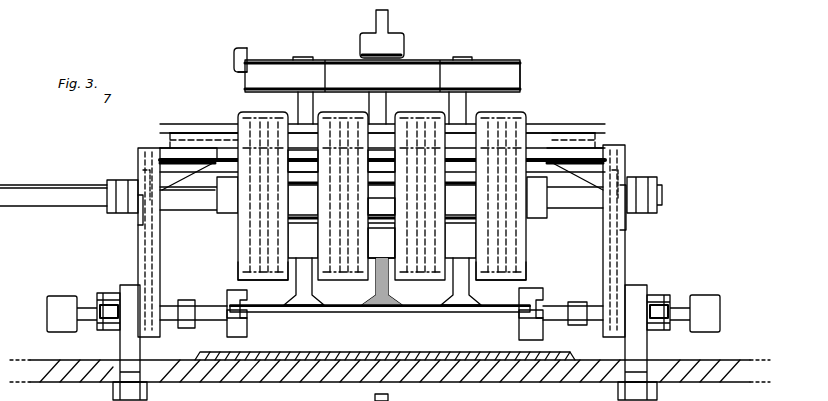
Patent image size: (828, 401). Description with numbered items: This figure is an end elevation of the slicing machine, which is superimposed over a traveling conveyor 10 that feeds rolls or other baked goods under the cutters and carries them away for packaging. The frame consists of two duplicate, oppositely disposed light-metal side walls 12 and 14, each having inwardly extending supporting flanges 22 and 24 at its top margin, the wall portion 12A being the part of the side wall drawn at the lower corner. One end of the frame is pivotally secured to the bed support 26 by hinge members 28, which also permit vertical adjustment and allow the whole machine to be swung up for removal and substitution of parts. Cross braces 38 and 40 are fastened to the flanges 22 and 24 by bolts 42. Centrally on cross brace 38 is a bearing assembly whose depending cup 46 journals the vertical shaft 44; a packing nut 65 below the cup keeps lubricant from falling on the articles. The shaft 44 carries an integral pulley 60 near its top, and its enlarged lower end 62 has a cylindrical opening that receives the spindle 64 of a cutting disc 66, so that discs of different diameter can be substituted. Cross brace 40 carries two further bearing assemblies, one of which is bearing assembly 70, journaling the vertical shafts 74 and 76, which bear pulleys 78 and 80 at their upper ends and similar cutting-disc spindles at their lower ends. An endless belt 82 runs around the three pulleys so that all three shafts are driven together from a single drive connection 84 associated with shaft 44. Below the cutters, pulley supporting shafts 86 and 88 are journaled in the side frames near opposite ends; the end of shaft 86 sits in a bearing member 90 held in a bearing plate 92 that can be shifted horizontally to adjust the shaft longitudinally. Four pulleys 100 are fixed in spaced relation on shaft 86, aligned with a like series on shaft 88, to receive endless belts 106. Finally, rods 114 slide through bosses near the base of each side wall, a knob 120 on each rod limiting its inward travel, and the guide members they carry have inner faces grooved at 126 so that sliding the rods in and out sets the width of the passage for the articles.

The traveling conveyor 10 is at (214, 352).
The side wall 12 is at (626, 165).
The bracket 12A is at (229, 300).
The side wall 14 is at (146, 154).
The supporting flange 22 is at (170, 150).
The supporting flange 24 is at (393, 395).
The bed support 26 is at (90, 366).
The hinge member 28 is at (121, 346).
The cross brace 38 is at (165, 140).
The cross brace 40 is at (538, 130).
The bolt 42 is at (189, 133).
The shaft 44 is at (388, 108).
The depending cup 46 is at (381, 161).
The pulley 60 is at (408, 63).
The enlarged lower end of shaft 62 is at (381, 243).
The spindle 64 is at (377, 296).
The packing nut 65 is at (381, 207).
The cutting disc 66 is at (414, 312).
The bearing assembly 70 is at (303, 161).
The vertical shaft 74 is at (298, 100).
The vertical shaft 76 is at (461, 108).
The pulley 78 is at (244, 60).
The pulley 80 is at (522, 76).
The endless belt 82 is at (240, 74).
The drive connection 84 is at (387, 22).
The pulley supporting shaft 86 is at (207, 205).
The pulley supporting shaft 88 is at (55, 195).
The bearing member 90 is at (122, 205).
The bearing plate 92 is at (140, 228).
The pulley 100 is at (240, 240).
The endless belt 106 is at (245, 258).
The rod 114 is at (216, 312).
The knob 120 is at (100, 300).
The groove 126 is at (246, 318).